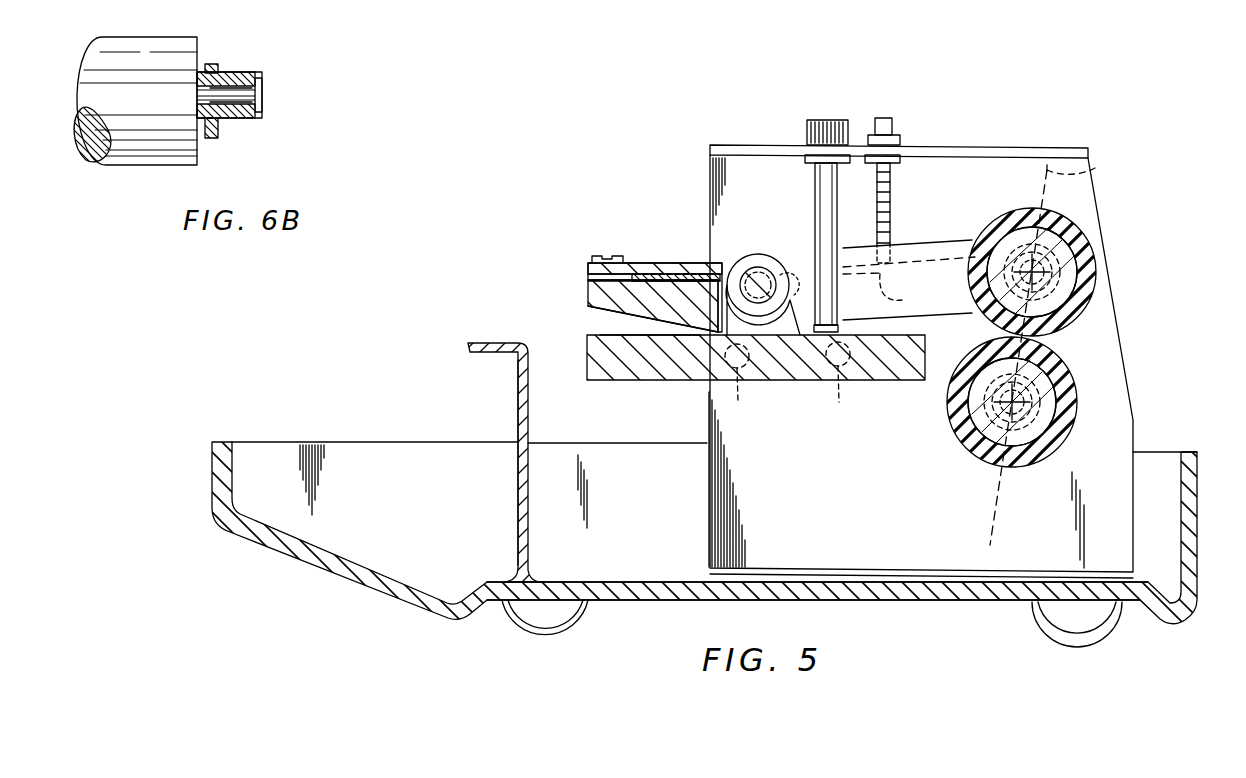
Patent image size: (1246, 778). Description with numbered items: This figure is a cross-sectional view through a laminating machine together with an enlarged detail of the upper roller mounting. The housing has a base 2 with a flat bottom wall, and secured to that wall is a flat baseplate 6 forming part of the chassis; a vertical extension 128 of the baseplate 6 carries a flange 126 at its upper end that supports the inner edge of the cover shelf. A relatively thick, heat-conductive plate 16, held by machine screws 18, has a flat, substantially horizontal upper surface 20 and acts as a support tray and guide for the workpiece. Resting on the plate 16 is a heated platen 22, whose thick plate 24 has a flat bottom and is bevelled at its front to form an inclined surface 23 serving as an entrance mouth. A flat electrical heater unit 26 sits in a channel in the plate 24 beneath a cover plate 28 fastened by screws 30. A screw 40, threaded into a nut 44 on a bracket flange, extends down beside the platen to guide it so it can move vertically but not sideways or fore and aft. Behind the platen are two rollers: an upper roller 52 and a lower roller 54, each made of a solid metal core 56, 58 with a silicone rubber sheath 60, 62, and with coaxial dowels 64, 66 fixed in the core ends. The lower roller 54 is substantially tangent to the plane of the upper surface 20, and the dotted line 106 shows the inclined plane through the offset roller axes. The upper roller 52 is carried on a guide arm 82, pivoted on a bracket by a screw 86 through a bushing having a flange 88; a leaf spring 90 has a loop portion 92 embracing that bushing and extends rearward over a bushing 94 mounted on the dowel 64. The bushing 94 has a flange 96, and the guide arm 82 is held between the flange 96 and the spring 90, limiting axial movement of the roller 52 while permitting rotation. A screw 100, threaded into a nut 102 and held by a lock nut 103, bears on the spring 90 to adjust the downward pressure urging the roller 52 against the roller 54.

In FIG. 5, the base 2 is at (312, 565).
In FIG. 5, the baseplate 6 is at (624, 582).
In FIG. 5, the plate 16 is at (630, 375).
In FIG. 5, the machine screws 18 is at (787, 384).
In FIG. 5, the upper surface 20 is at (585, 333).
In FIG. 5, the heated platen 22 is at (615, 259).
In FIG. 5, the inclined surface 23 is at (605, 322).
In FIG. 5, the plate 24 is at (588, 279).
In FIG. 5, the electrical heater unit 26 is at (690, 273).
In FIG. 5, the cover plate 28 is at (590, 264).
In FIG. 5, the screws 30 is at (600, 256).
In FIG. 5, the screw 40 is at (822, 200).
In FIG. 5, the nut 44 is at (810, 160).
In FIG. 6B, the upper roller 52 is at (148, 128).
In FIG. 5, the upper roller 52 is at (1070, 271).
In FIG. 5, the lower roller 54 is at (1066, 402).
In FIG. 5, the core 56 is at (1095, 263).
In FIG. 5, the core 58 is at (1082, 400).
In FIG. 5, the sheath 60 is at (1098, 281).
In FIG. 5, the sheath 62 is at (1086, 416).
In FIG. 6B, the dowel 64 is at (255, 98).
In FIG. 5, the dowel 64 is at (1100, 293).
In FIG. 5, the dowel 66 is at (1060, 428).
In FIG. 6B, the guide arm 82 is at (213, 137).
In FIG. 5, the guide arm 82 is at (938, 250).
In FIG. 5, the screw 86 is at (768, 270).
In FIG. 5, the flange 88 is at (730, 270).
In FIG. 6B, the leaf spring 90 is at (234, 72).
In FIG. 5, the leaf spring 90 is at (898, 300).
In FIG. 5, the loop portion 92 is at (789, 298).
In FIG. 6B, the bushing 94 is at (260, 87).
In FIG. 6B, the flange 96 is at (209, 66).
In FIG. 5, the screw 100 is at (891, 201).
In FIG. 5, the nut 102 is at (898, 160).
In FIG. 5, the lock nut 103 is at (898, 140).
In FIG. 5, the dotted line 106 is at (1100, 172).
In FIG. 5, the flange 126 is at (487, 352).
In FIG. 5, the vertical extension 128 is at (518, 476).